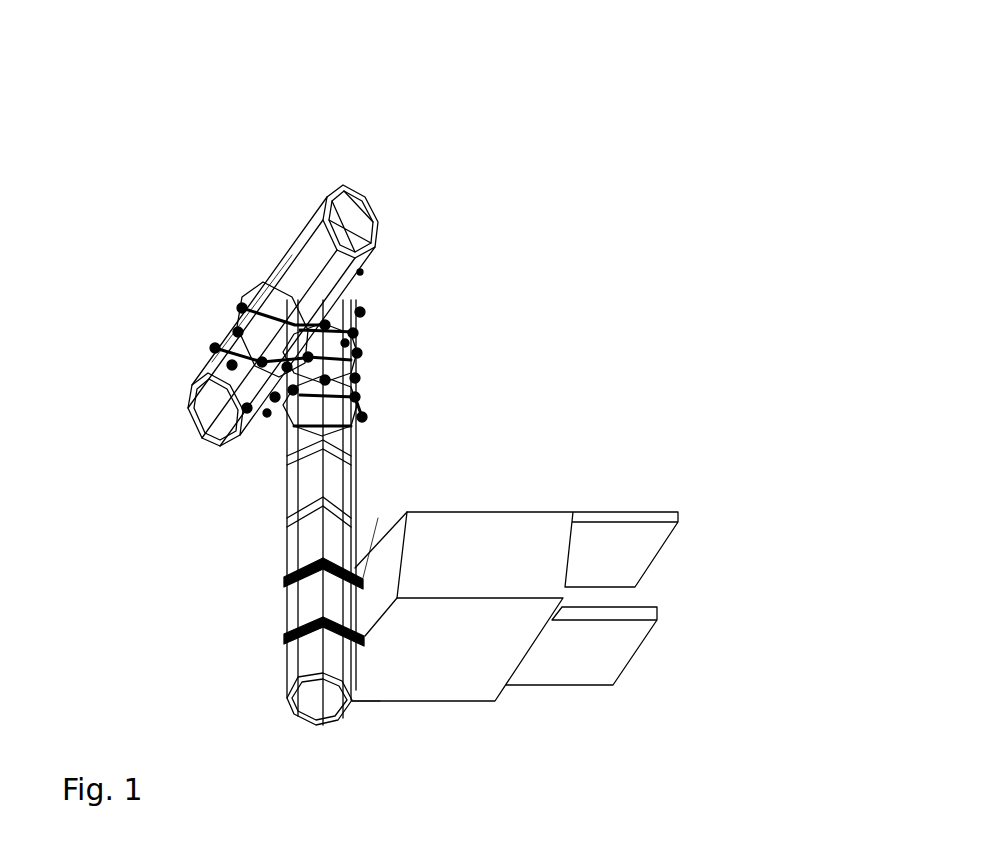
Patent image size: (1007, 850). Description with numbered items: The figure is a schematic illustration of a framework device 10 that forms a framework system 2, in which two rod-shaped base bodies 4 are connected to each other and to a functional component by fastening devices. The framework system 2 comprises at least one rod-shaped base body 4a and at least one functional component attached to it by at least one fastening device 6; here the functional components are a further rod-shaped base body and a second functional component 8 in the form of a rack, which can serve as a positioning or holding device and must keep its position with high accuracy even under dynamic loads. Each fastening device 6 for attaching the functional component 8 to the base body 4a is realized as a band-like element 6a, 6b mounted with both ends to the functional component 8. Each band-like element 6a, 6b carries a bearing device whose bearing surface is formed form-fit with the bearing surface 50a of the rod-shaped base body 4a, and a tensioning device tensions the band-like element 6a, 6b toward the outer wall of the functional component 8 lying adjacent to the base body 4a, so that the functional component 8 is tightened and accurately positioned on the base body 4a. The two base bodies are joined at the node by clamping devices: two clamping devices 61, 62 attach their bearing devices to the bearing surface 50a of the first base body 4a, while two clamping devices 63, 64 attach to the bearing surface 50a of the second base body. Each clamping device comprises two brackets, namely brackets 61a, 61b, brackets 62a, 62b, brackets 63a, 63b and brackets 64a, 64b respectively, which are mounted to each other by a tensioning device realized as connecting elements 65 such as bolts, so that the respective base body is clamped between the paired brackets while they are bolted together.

The framework system 2 is at (425, 150).
The rod-shaped base body 4 is at (146, 148).
The rod-shaped base body 4a is at (292, 255).
The fastening device 6 is at (376, 365).
The band-like element 6a is at (287, 640).
The band-like element 6b is at (378, 518).
The functional component 8 is at (516, 510).
The framework device 10 is at (480, 380).
The bearing surface 50a is at (348, 637).
The clamping device 61 is at (366, 437).
The bracket 61a is at (360, 403).
The bracket 61b is at (300, 402).
The clamping device 62 is at (365, 340).
The bracket 62a is at (367, 353).
The bracket 62b is at (297, 340).
The clamping device 63 is at (193, 388).
The bracket 63a is at (195, 410).
The bracket 63b is at (267, 413).
The clamping device 64 is at (248, 283).
The bracket 64a is at (232, 318).
The bracket 64b is at (360, 272).
The connecting element 65 is at (232, 365).